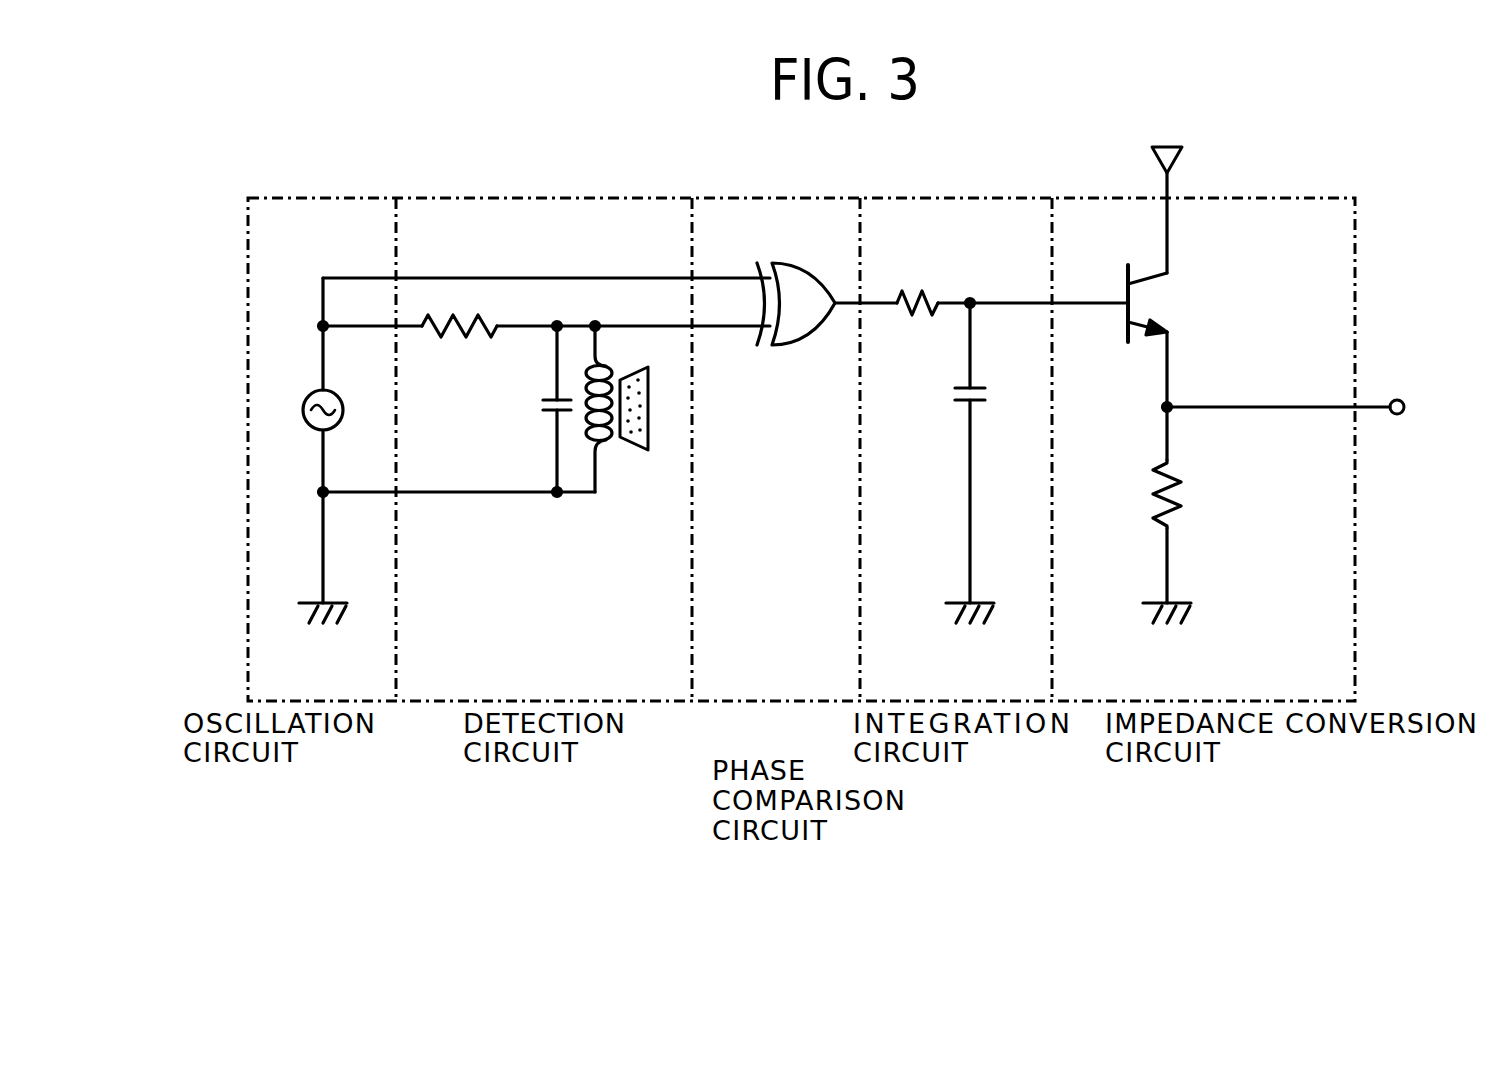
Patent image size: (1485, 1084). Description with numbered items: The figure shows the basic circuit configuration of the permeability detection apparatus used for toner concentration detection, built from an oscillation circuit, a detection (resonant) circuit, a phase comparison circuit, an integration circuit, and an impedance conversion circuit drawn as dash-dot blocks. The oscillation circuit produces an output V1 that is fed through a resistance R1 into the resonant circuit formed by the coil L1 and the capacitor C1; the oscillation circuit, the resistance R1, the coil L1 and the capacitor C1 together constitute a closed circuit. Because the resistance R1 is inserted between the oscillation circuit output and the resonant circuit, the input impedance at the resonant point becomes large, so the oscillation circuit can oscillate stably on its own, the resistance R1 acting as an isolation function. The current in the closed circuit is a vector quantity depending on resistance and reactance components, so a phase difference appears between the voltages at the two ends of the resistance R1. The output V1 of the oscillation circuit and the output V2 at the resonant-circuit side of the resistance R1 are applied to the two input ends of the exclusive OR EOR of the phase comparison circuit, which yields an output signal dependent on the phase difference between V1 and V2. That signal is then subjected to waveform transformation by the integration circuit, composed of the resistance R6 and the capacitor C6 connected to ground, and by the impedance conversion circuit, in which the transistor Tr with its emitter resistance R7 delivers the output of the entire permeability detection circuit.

The output of the oscillation circuit V1 is at (534, 433).
The output of the resistance on the resonant circuit side V2 is at (662, 312).
The resistance R1 is at (440, 343).
The capacitor C1 is at (459, 411).
The coil L1 is at (620, 409).
The exclusive OR EOR is at (821, 328).
The resistance of the integration circuit R6 is at (1012, 286).
The capacitor of the integration circuit C6 is at (987, 463).
The transistor Tr is at (1266, 303).
The resistance of the impedance conversion circuit R7 is at (1185, 541).